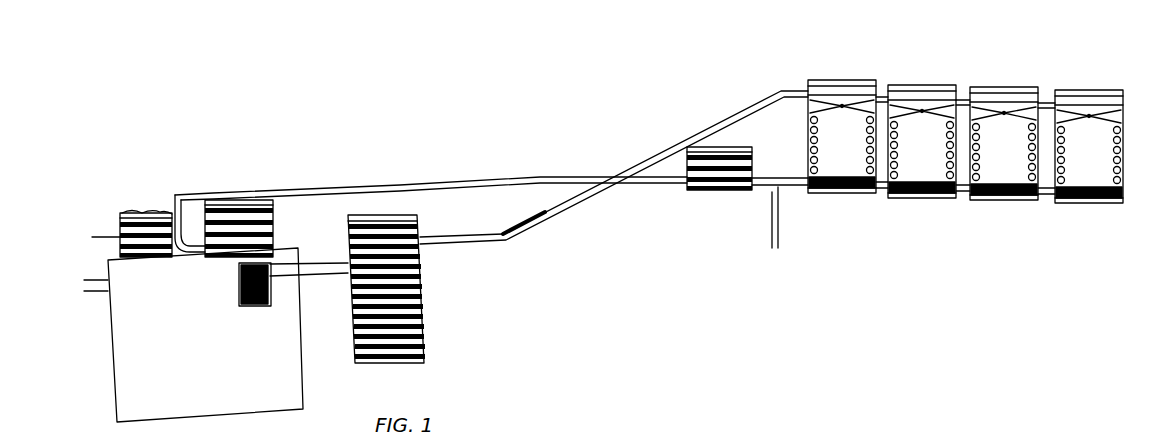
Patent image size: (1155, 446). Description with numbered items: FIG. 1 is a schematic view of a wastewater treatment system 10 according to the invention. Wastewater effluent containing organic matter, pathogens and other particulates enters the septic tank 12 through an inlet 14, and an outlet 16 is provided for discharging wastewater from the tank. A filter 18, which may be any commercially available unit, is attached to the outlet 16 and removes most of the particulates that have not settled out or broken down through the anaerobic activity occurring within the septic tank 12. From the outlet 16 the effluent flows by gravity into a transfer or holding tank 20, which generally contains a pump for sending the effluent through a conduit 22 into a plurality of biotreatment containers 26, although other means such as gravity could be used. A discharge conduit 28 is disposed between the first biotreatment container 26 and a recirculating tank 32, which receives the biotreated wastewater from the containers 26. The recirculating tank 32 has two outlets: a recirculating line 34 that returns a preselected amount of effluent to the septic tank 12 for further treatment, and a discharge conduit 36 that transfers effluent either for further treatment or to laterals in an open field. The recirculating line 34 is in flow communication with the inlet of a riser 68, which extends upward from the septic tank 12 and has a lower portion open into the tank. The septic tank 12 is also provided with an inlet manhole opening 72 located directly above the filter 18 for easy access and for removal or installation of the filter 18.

The pump / treatment system 10 is at (147, 213).
The septic tank 12 is at (126, 347).
The inlet 14 is at (92, 278).
The outlet 16 is at (293, 265).
The filter 18 is at (270, 302).
The transfer or holding tank 20 is at (420, 306).
The conduit 22 is at (556, 210).
The biotreatment containers 26 is at (812, 88).
The discharge conduit 28 is at (790, 187).
The recirculating tank 32 is at (720, 188).
The recirculating line 34 is at (404, 185).
The discharge conduit 36 is at (775, 248).
The riser 68 is at (122, 216).
The inlet manhole opening 72 is at (246, 196).